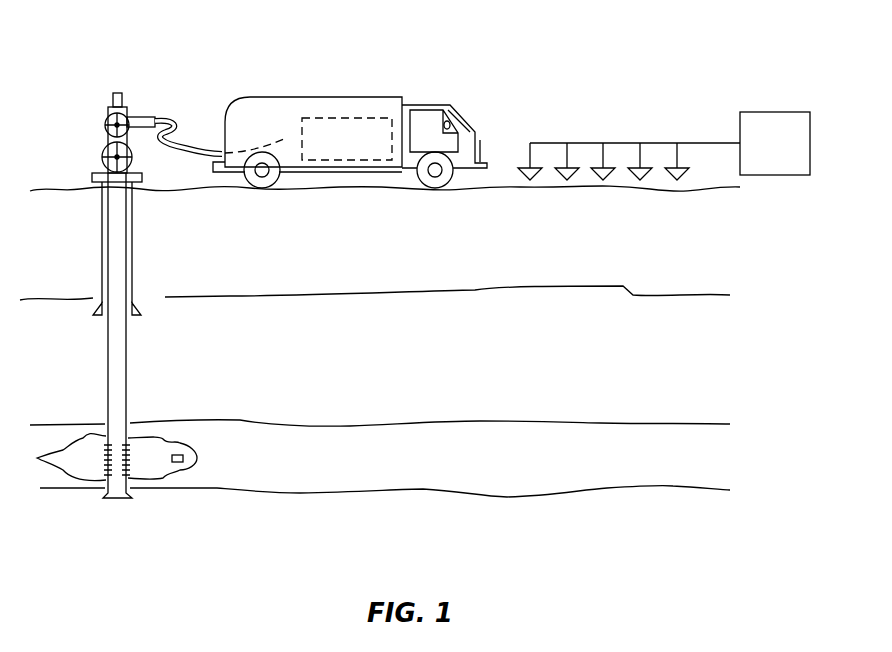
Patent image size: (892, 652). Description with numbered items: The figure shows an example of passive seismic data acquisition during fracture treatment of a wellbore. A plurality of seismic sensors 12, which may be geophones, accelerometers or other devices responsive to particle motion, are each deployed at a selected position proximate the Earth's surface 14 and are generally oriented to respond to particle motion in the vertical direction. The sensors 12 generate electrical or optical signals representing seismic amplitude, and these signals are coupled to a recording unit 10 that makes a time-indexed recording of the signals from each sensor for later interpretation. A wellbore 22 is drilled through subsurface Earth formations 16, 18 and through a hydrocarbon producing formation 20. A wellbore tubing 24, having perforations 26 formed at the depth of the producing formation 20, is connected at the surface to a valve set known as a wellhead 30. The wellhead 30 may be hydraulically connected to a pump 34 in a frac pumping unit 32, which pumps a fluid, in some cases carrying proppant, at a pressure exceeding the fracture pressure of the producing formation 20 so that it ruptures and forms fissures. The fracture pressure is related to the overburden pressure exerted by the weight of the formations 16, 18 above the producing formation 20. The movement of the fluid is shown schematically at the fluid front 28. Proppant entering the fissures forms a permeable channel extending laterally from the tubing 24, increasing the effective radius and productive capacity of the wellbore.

The recording unit 10 is at (777, 112).
The seismic sensors 12 is at (517, 173).
The Earth's surface 14 is at (463, 188).
The subsurface Earth formation 16 is at (299, 249).
The subsurface Earth formation 18 is at (299, 353).
The hydrocarbon producing formation 20 is at (299, 469).
The wellbore 22 is at (133, 242).
The wellbore tubing 24 is at (127, 357).
The perforations 26 is at (130, 462).
The fluid front 28 is at (195, 458).
The wellhead 30 is at (141, 117).
The frac pumping unit 32 is at (280, 95).
The pump 34 is at (320, 118).